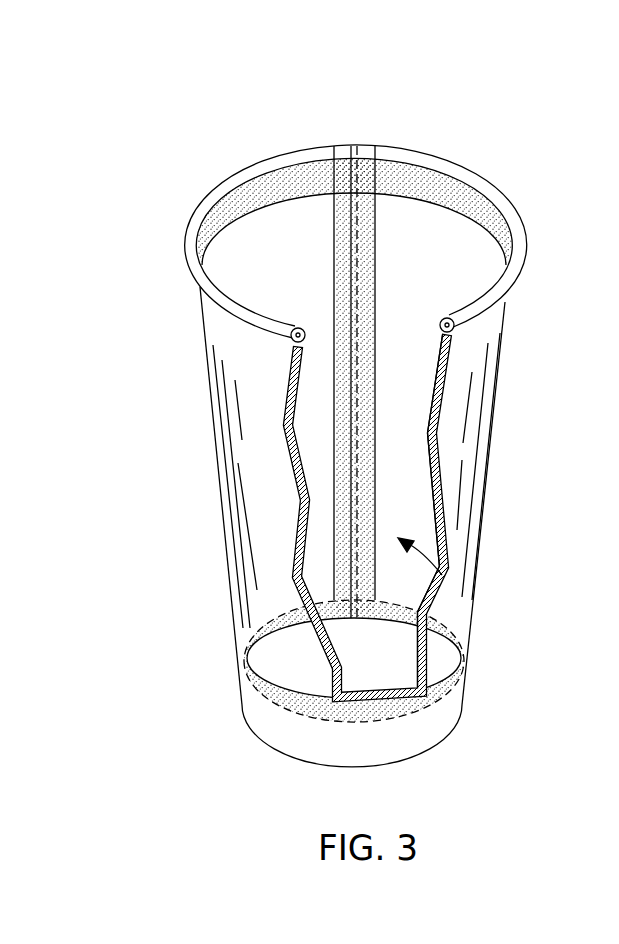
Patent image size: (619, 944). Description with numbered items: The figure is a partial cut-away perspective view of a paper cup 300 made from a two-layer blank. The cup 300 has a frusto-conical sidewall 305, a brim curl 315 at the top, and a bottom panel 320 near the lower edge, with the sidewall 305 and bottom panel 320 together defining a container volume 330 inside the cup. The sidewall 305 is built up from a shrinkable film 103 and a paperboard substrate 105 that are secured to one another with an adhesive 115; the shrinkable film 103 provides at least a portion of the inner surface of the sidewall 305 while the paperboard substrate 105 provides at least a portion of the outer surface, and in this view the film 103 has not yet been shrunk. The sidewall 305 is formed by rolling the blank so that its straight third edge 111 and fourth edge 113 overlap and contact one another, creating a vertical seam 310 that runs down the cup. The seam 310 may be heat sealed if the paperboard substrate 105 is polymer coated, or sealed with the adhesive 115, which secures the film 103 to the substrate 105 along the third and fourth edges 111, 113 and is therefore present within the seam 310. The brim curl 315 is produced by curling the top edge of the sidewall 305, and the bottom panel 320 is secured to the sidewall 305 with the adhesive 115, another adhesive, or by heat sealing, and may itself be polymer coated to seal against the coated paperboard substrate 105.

The paper cup 300 is at (342, 416).
The sidewall 305 is at (500, 424).
The seam 310 is at (357, 130).
The brim curl 315 is at (457, 175).
The bottom panel 320 is at (378, 670).
The container volume 330 is at (443, 576).
The shrinkable film 103 is at (483, 282).
The paperboard substrate 105 is at (447, 513).
The third edge 111 is at (348, 148).
The fourth edge 113 is at (358, 225).
The adhesive 115 is at (281, 187).